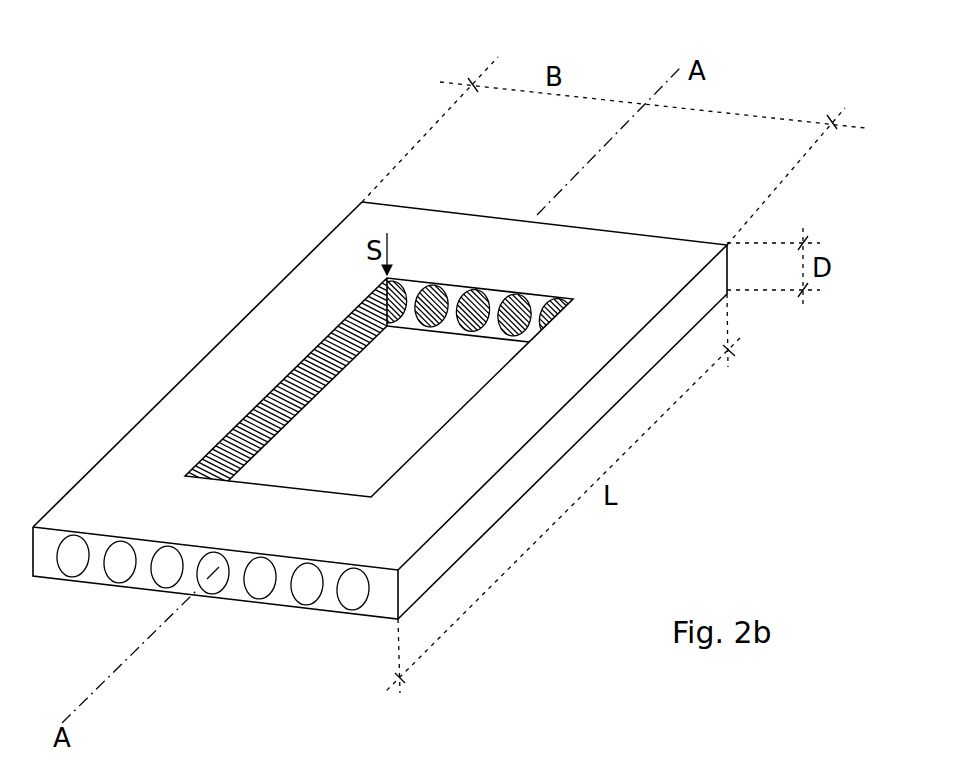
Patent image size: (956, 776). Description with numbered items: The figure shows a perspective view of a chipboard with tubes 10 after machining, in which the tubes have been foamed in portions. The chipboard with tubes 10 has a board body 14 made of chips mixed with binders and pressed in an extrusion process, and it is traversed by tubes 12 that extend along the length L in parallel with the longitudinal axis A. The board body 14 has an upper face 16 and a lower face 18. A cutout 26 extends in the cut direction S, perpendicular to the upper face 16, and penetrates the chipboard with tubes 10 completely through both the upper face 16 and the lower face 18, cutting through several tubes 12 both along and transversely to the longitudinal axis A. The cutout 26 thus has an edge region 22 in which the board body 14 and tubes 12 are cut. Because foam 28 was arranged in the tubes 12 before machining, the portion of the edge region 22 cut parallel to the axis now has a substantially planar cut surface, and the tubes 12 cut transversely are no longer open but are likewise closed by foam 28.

The chipboard with tubes 10 is at (380, 342).
The tubes 12 is at (170, 588).
The board body 14 is at (233, 347).
The upper face 16 is at (176, 408).
The lower face 18 is at (468, 558).
The edge region 22 is at (343, 317).
The cutout 26 is at (445, 384).
The foam 28 is at (553, 300).